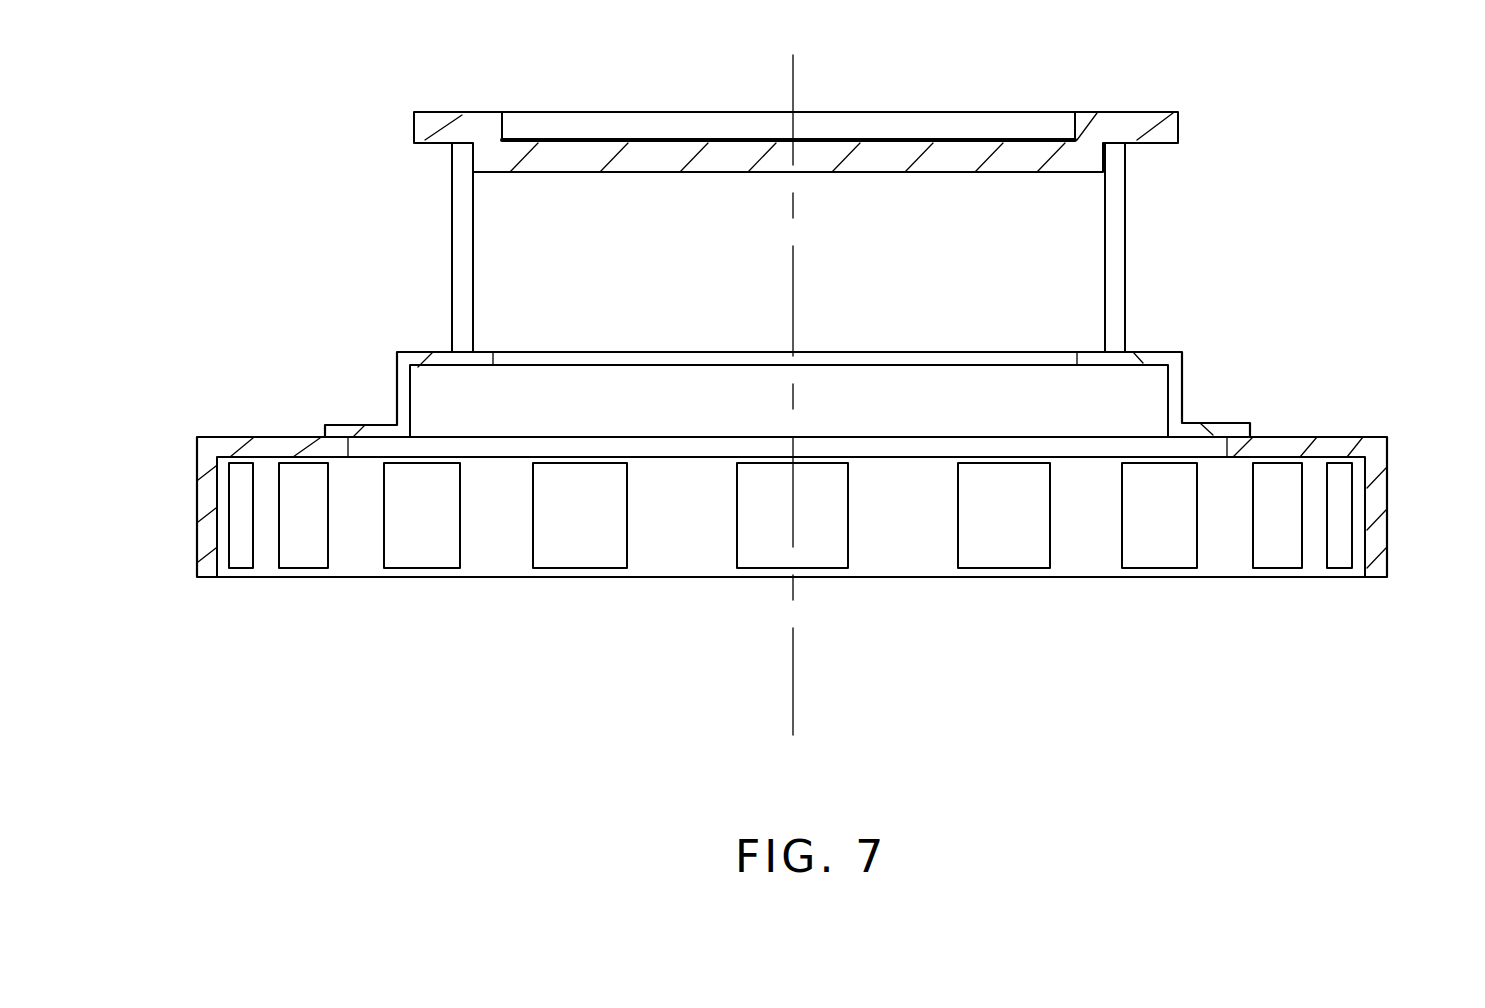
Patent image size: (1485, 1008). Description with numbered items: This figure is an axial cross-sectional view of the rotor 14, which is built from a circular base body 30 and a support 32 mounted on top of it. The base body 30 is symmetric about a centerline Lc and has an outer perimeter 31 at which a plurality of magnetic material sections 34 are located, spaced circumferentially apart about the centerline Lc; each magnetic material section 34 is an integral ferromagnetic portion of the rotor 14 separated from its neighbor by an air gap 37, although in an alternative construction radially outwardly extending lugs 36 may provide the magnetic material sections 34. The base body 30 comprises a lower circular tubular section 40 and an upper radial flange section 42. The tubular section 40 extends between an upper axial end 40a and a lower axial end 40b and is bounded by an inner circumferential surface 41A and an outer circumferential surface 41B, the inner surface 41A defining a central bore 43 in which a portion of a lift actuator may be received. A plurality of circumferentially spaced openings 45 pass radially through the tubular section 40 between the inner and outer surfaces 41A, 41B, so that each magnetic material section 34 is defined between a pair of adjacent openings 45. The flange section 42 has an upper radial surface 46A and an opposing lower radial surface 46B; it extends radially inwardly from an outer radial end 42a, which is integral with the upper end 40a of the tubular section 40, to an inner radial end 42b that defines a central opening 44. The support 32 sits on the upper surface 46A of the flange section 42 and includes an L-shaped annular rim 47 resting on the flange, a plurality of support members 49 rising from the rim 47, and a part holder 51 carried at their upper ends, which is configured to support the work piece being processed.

The rotor 14 is at (265, 147).
The part holder 51 is at (1183, 130).
The support members 49 is at (453, 233).
The support 32 is at (1195, 282).
The circular base body 30 is at (1378, 410).
The L-shaped annular rim 47 is at (1186, 388).
The central opening 44 is at (515, 446).
The radial flange section 42 is at (241, 434).
The outer radial end 42a is at (221, 447).
The inner radial end 42b is at (370, 434).
The upper radial surface 46A is at (273, 437).
The lower radial surface 46B is at (342, 458).
The circular tubular section 40 is at (198, 505).
The upper axial end 40a is at (205, 462).
The lower axial end 40b is at (212, 580).
The outer perimeter 31 is at (1400, 496).
The inner circumferential surface 41A is at (1357, 545).
The outer circumferential surface 41B is at (1388, 546).
The openings 45 is at (301, 542).
The air gap 37 is at (416, 544).
The lugs 36 is at (350, 543).
The magnetic material sections 34 is at (490, 544).
The central bore 43 is at (873, 532).
The centerline Lc is at (798, 694).